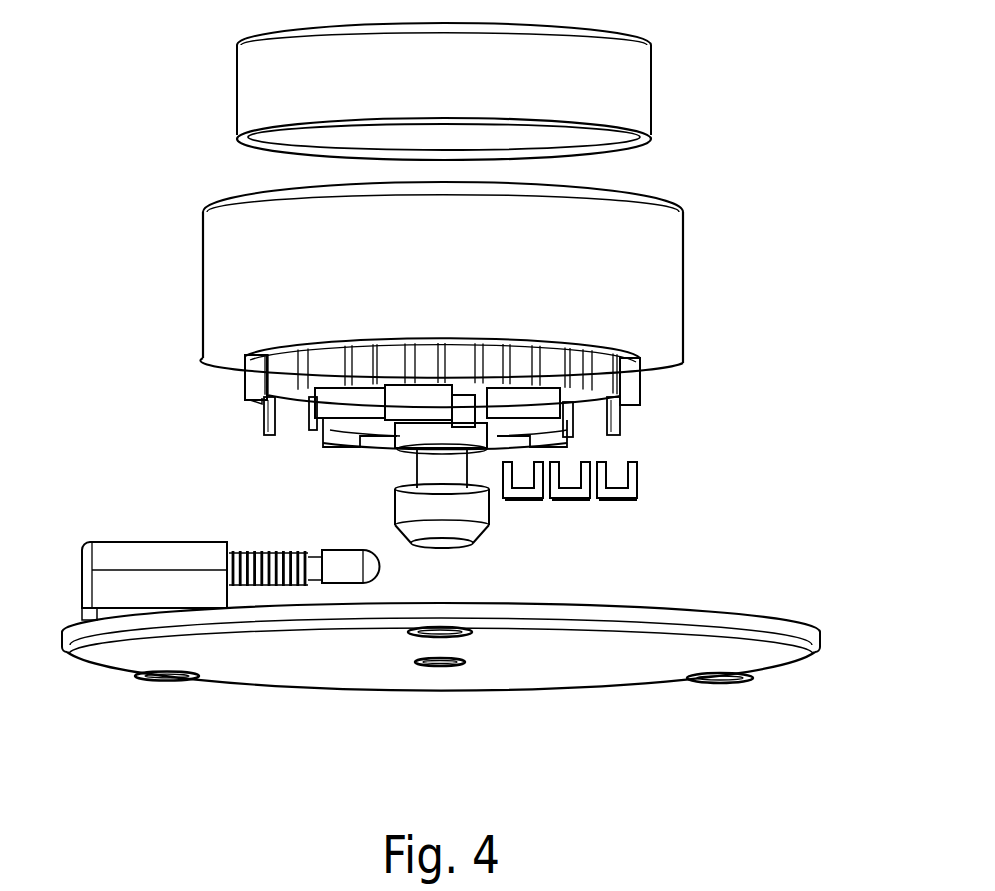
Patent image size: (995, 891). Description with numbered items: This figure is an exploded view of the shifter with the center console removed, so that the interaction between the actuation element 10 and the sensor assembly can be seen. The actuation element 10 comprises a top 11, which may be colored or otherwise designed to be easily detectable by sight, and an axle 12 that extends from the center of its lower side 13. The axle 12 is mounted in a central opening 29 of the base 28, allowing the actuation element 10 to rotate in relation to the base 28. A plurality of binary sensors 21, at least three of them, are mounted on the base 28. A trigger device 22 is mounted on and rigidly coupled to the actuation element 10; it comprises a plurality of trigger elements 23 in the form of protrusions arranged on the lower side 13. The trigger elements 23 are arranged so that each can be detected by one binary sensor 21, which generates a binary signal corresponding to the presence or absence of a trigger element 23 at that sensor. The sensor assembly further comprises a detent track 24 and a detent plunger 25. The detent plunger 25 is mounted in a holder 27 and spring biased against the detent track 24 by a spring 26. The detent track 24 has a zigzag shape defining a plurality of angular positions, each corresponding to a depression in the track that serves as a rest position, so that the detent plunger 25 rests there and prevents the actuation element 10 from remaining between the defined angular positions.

The actuation element 10 is at (683, 270).
The top 11 is at (652, 100).
The axle 12 is at (453, 470).
The lower side 13 is at (640, 373).
The binary sensors 21 is at (643, 496).
The trigger device 22 is at (585, 425).
The trigger elements 23 is at (327, 412).
The detent track 24 is at (255, 383).
The detent plunger 25 is at (342, 557).
The spring 26 is at (256, 550).
The holder 27 is at (100, 587).
The base 28 is at (777, 665).
The central opening 29 is at (438, 664).